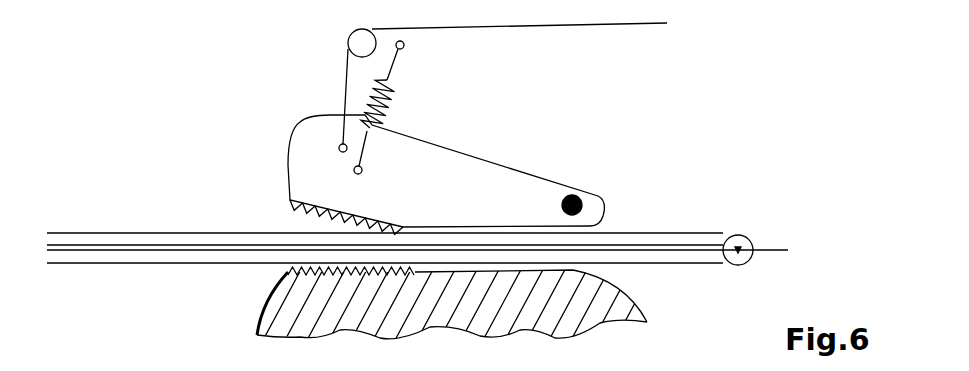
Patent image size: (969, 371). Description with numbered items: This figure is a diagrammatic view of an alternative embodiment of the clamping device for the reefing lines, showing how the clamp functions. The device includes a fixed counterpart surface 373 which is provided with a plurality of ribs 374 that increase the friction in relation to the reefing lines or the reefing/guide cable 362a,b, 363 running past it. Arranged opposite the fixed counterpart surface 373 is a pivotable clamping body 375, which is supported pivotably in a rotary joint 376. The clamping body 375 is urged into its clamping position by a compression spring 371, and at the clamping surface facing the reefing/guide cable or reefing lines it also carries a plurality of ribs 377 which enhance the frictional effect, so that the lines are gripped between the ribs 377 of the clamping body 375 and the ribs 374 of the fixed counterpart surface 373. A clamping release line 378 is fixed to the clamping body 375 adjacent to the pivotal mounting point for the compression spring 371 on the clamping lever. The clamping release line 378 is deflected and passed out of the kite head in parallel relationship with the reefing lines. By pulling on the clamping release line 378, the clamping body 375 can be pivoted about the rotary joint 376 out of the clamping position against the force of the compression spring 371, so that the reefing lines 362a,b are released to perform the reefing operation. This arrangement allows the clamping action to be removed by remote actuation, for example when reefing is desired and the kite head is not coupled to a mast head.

The clamping release line 378 is at (345, 78).
The compression spring 371 is at (397, 106).
The clamping body 375 is at (453, 170).
The rotary joint 376 is at (583, 197).
The ribs 377 is at (283, 210).
The reefing lines 362a,b is at (185, 233).
The reefing/guide cable 363 is at (773, 250).
The ribs 374 is at (290, 272).
The fixed counterpart surface 373 is at (595, 307).